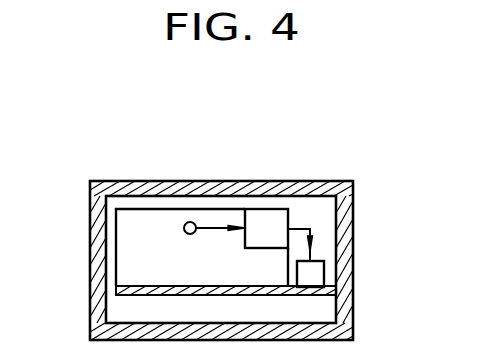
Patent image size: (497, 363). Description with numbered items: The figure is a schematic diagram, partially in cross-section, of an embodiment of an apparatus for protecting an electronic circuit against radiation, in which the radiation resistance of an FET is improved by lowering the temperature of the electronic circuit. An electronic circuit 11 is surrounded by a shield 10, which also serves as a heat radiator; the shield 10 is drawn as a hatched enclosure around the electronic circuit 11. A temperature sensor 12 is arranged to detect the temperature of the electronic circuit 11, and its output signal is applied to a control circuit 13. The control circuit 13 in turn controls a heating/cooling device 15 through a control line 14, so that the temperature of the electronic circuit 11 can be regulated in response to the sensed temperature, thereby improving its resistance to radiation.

The shield 10 is at (256, 186).
The electronic circuit 11 is at (150, 228).
The temperature sensor 12 is at (190, 222).
The control circuit 13 is at (273, 222).
The control line 14 is at (313, 237).
The heating/cooling device 15 is at (324, 275).